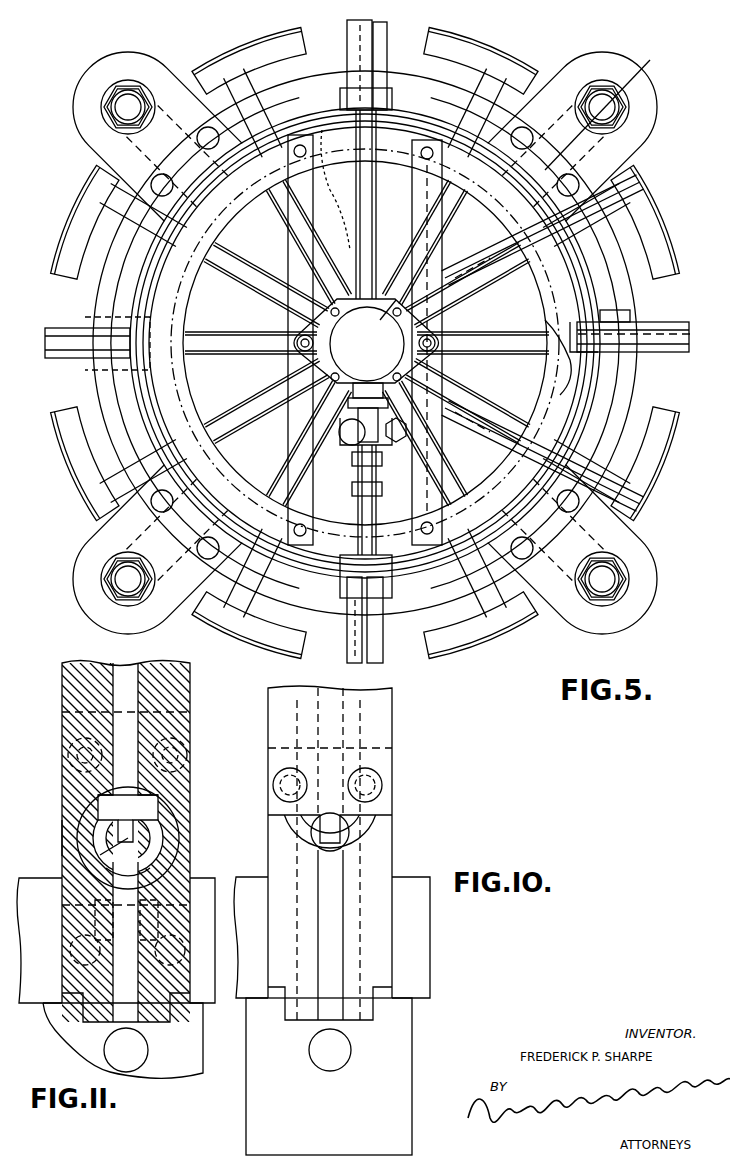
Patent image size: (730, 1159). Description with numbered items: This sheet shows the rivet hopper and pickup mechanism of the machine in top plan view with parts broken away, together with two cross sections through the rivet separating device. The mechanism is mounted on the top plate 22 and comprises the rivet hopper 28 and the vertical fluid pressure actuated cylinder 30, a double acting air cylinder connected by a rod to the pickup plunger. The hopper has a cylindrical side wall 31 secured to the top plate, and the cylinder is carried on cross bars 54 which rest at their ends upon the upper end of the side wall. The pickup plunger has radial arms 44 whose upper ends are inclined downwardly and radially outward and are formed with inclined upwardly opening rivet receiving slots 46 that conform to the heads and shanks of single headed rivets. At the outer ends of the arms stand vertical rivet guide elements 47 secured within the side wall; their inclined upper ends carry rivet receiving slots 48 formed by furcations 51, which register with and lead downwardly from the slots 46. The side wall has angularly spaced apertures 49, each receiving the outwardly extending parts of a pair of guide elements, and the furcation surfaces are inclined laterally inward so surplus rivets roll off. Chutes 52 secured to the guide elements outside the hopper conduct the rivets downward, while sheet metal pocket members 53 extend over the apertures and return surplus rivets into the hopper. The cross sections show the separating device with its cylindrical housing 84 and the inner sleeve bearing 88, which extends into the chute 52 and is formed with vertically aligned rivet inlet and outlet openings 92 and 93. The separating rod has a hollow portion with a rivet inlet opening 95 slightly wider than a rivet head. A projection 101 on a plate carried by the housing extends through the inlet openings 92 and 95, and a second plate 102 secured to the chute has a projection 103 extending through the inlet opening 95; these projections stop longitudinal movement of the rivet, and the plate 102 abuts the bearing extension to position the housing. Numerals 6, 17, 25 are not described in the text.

In FIG. 5, the section line 6- 6 is at (517, 199).
In FIG. 5, the lever bar 17 is at (514, 252).
In FIG. 5, the top plate 22 is at (107, 296).
In FIG. 5, the shaft plate 25 is at (398, 172).
In FIG. 5, the rivet hopper 28 is at (470, 218).
In FIG. 5, the fluid pressure actuated cylinder 30 is at (408, 303).
In FIG. 5, the cylindrical side wall 31 is at (332, 132).
In FIG. 5, the radial arms 44 is at (480, 396).
In FIG. 5, the rivet receiving slots 46 is at (473, 283).
In FIG. 5, the vertical rivet guide elements 47 is at (505, 418).
In FIG. 5, the rivet receiving slots 48 is at (521, 232).
In FIG. 5, the angularly spaced apertures 49 is at (556, 304).
In FIG. 5, the furcations 51 is at (488, 262).
In FIG. 5, the chutes 52 is at (644, 335).
In FIG. 11, the chutes 52 is at (180, 705).
In FIG. 10, the chutes 52 is at (383, 731).
In FIG. 5, the pocket members 53 is at (586, 300).
In FIG. 5, the cross bars 54 is at (300, 236).
In FIG. 11, the cylindrical housing 84 is at (63, 832).
In FIG. 11, the inner sleeve bearing 88 is at (172, 835).
In FIG. 10, the inner sleeve bearing 88 is at (368, 845).
In FIG. 11, the rivet inlet opening 92 is at (163, 813).
In FIG. 11, the rivet outlet opening 93 is at (137, 875).
In FIG. 11, the rivet inlet opening 95 is at (122, 837).
In FIG. 11, the projection 101 is at (113, 852).
In FIG. 10, the second plate 102 is at (382, 762).
In FIG. 10, the projection 103 is at (338, 827).